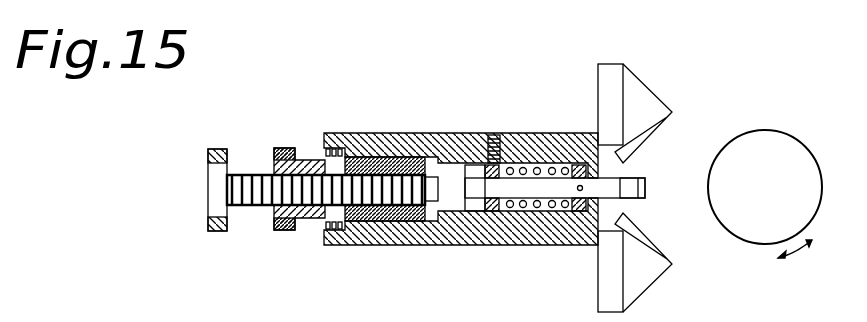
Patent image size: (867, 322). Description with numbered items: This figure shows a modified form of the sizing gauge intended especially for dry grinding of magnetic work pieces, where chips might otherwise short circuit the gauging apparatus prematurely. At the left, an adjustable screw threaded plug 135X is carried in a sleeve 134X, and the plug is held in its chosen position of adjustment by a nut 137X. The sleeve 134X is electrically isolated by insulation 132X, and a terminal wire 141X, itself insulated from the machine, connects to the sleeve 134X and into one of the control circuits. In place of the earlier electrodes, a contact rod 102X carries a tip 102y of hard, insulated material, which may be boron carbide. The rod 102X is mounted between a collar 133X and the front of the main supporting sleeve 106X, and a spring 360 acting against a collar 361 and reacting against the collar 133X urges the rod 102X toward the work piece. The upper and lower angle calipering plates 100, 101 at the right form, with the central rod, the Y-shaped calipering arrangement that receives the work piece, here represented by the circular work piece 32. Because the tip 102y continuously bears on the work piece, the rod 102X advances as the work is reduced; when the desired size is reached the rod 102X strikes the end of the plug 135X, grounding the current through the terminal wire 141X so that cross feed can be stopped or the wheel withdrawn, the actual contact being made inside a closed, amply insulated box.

The adjustable screw threaded plug 135X is at (250, 172).
The nut 137X is at (313, 148).
The sleeve 134X is at (370, 157).
The terminal wire 141X is at (373, 228).
The insulation 132X is at (410, 135).
The collar 133X is at (492, 247).
The main supporting sleeve 106X is at (520, 230).
The contact rod 102X is at (472, 183).
The tip of hard insulated material 102y is at (646, 190).
The spring 360 is at (538, 165).
The collar 361 is at (573, 211).
The upper angle calipering plate 100 is at (644, 107).
The lower angle calipering plate 101 is at (640, 280).
The wheel 32 is at (782, 143).